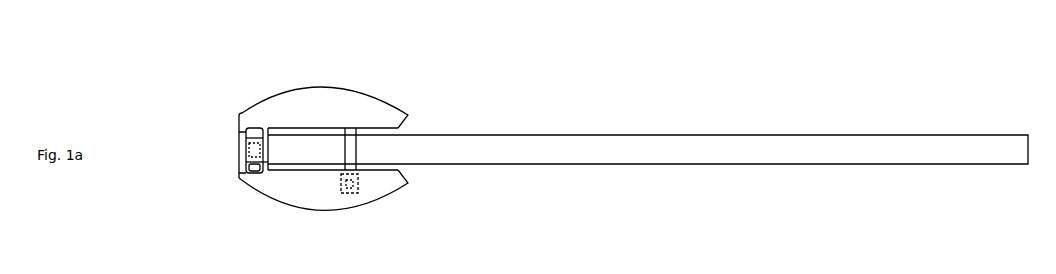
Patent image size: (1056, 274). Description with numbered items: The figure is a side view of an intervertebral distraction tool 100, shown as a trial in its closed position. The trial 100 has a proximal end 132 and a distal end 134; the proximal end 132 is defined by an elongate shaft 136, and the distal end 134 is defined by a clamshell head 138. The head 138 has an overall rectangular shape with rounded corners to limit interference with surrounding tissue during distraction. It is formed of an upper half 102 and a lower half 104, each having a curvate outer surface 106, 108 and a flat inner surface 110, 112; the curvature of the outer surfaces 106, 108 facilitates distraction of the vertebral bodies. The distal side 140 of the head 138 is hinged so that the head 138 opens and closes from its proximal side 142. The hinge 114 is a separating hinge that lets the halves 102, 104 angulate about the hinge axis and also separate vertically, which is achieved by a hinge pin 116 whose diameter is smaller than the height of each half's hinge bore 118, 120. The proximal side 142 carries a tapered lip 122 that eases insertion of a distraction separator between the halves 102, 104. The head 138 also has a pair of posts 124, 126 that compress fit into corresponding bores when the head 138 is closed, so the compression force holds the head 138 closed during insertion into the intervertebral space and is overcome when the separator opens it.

The intervertebral distraction tool 100 is at (634, 108).
The upper half 102 is at (401, 98).
The lower half 104 is at (393, 200).
The curvate outer surface 106 is at (312, 87).
The curvate outer surface 108 is at (307, 213).
The flat inner surface 110 is at (297, 127).
The flat inner surface 112 is at (292, 175).
The hinge 114 is at (238, 154).
The hinge pin 116 is at (238, 152).
The hinge bore 118 is at (238, 139).
The hinge bore 120 is at (242, 173).
The tapered lip 122 is at (413, 120).
The post 124 is at (350, 188).
The post 126 is at (363, 183).
The proximal end 132 is at (1014, 118).
The distal end 134 is at (222, 163).
The elongate shaft 136 is at (759, 132).
The clamshell head 138 is at (381, 71).
The distal side 140 is at (238, 143).
The proximal side 142 is at (409, 133).